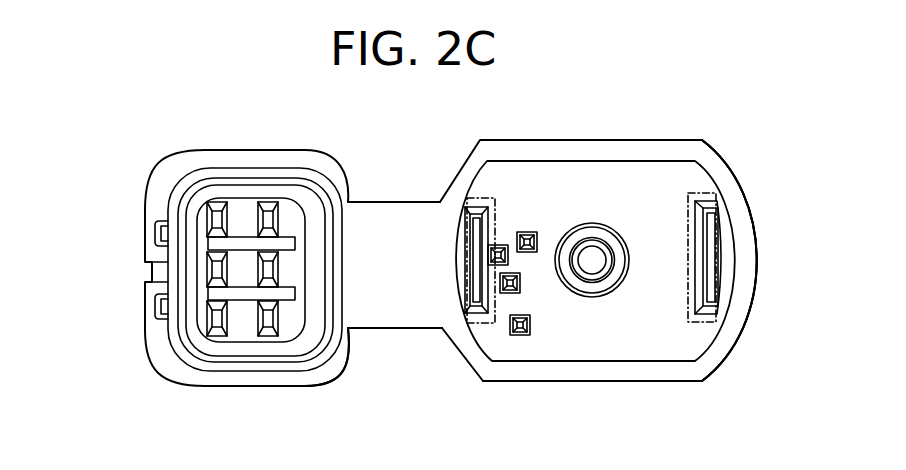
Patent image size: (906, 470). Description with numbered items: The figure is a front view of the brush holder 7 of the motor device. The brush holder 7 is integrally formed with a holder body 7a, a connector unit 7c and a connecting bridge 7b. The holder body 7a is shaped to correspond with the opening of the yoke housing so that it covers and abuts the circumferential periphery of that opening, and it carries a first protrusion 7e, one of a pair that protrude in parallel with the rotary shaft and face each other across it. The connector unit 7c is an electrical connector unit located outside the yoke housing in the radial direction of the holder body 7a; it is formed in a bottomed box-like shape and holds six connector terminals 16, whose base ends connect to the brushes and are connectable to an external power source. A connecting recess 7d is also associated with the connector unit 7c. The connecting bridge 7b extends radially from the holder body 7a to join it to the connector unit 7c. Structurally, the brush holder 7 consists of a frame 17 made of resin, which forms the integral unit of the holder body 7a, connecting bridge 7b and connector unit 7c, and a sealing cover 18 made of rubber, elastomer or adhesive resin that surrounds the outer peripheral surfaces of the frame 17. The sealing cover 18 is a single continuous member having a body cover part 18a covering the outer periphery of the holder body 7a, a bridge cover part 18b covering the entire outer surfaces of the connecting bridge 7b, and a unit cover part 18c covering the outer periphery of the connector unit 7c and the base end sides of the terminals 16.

The brush holder 7 is at (712, 118).
The holder body 7a is at (740, 197).
The connecting bridge 7b is at (395, 207).
The connector unit 7c is at (147, 215).
The connecting recess 7d is at (712, 226).
The first protrusion 7e is at (475, 230).
The connector terminal 16 is at (267, 203).
The frame 17 is at (695, 335).
The sealing cover 18 is at (660, 370).
The body cover part 18a is at (752, 260).
The bridge cover part 18b is at (390, 317).
The unit cover part 18c is at (321, 375).